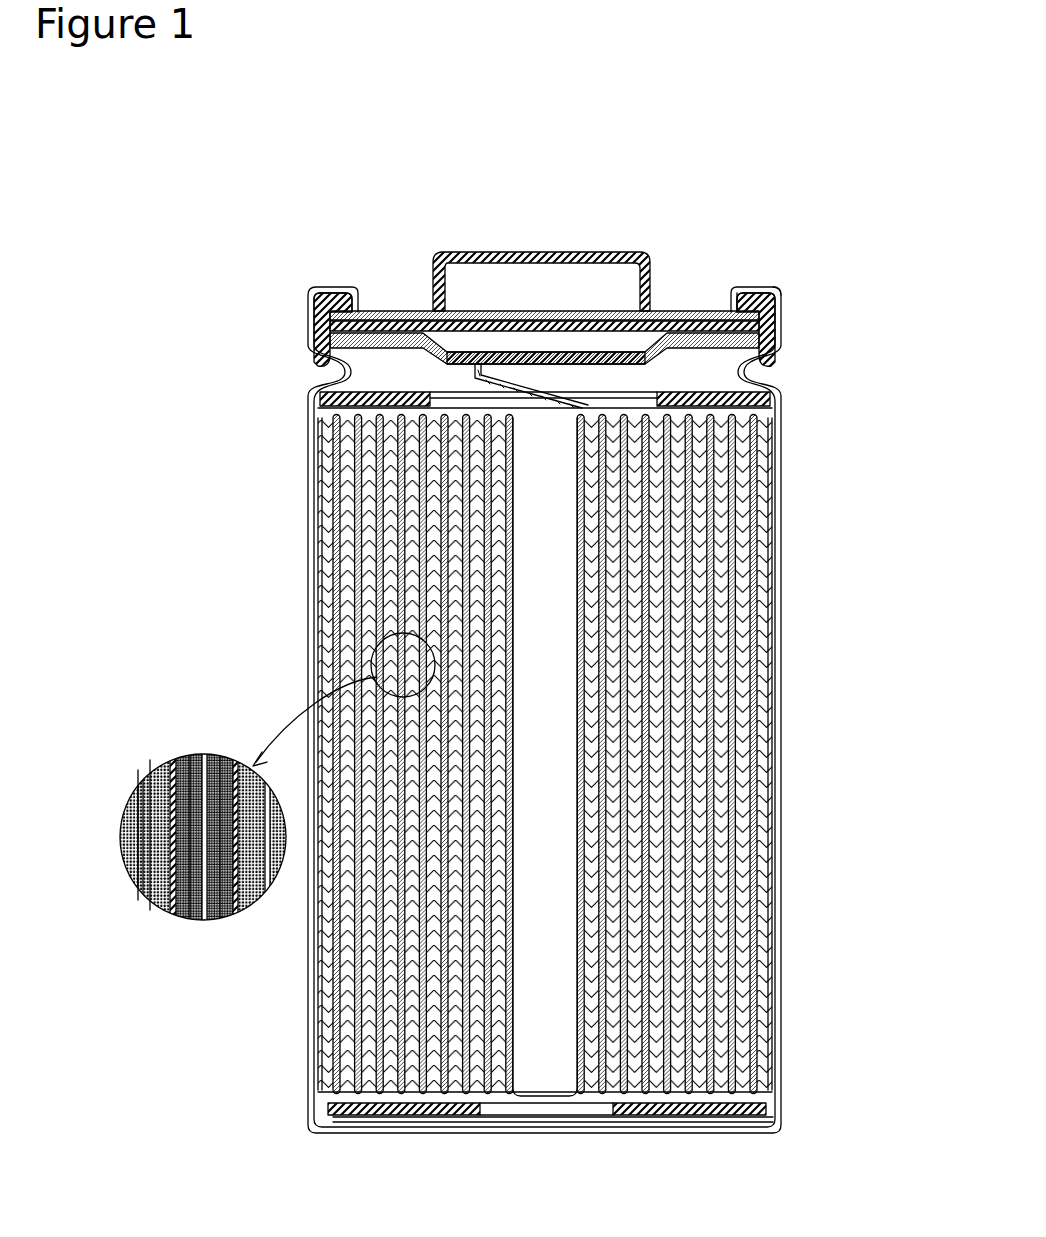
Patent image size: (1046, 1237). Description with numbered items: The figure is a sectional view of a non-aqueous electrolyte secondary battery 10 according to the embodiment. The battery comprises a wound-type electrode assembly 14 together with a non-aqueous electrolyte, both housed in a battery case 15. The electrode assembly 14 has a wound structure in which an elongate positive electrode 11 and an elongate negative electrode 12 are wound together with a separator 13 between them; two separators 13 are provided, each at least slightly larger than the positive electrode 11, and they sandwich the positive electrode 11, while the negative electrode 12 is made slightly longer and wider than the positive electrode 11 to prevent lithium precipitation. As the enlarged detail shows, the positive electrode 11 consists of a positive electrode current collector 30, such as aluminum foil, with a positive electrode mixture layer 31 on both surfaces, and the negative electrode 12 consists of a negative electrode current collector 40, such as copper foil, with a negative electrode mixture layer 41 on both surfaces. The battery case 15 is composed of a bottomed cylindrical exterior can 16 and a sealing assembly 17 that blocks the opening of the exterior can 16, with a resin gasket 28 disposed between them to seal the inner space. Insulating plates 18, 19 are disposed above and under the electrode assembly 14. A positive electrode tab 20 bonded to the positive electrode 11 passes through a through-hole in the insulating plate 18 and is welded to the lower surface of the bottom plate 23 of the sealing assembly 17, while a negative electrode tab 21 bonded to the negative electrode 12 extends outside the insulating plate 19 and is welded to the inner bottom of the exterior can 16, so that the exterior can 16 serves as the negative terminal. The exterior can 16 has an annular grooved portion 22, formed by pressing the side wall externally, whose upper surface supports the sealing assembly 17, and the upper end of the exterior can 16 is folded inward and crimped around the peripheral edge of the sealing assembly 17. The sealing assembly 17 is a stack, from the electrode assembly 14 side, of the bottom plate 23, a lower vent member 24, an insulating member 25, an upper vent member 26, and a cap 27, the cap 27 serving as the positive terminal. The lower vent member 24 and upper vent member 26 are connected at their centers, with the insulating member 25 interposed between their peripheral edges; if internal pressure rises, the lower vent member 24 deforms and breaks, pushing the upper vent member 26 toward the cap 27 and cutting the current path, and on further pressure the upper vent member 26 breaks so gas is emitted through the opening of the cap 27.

The non-aqueous electrolyte secondary battery 10 is at (784, 126).
The positive electrode 11 is at (755, 822).
The negative electrode 12 is at (763, 855).
The separator 13 is at (775, 880).
The electrode assembly 14 is at (503, 752).
The battery case 15 is at (672, 196).
The exterior can 16 is at (755, 290).
The sealing assembly 17 is at (684, 305).
The insulating plate 18 is at (783, 403).
The insulating plate 19 is at (786, 1118).
The positive electrode tab 20 is at (473, 372).
The negative electrode tab 21 is at (316, 1115).
The grooved portion 22 is at (326, 394).
The bottom plate 23 is at (545, 352).
The lower vent member 24 is at (455, 321).
The insulating member 25 is at (390, 311).
The upper vent member 26 is at (470, 311).
The cap 27 is at (613, 252).
The gasket 28 is at (783, 307).
The positive electrode current collector 30 is at (203, 752).
The positive electrode mixture layer 31 is at (220, 750).
The negative electrode current collector 40 is at (138, 777).
The negative electrode mixture layer 41 is at (155, 770).